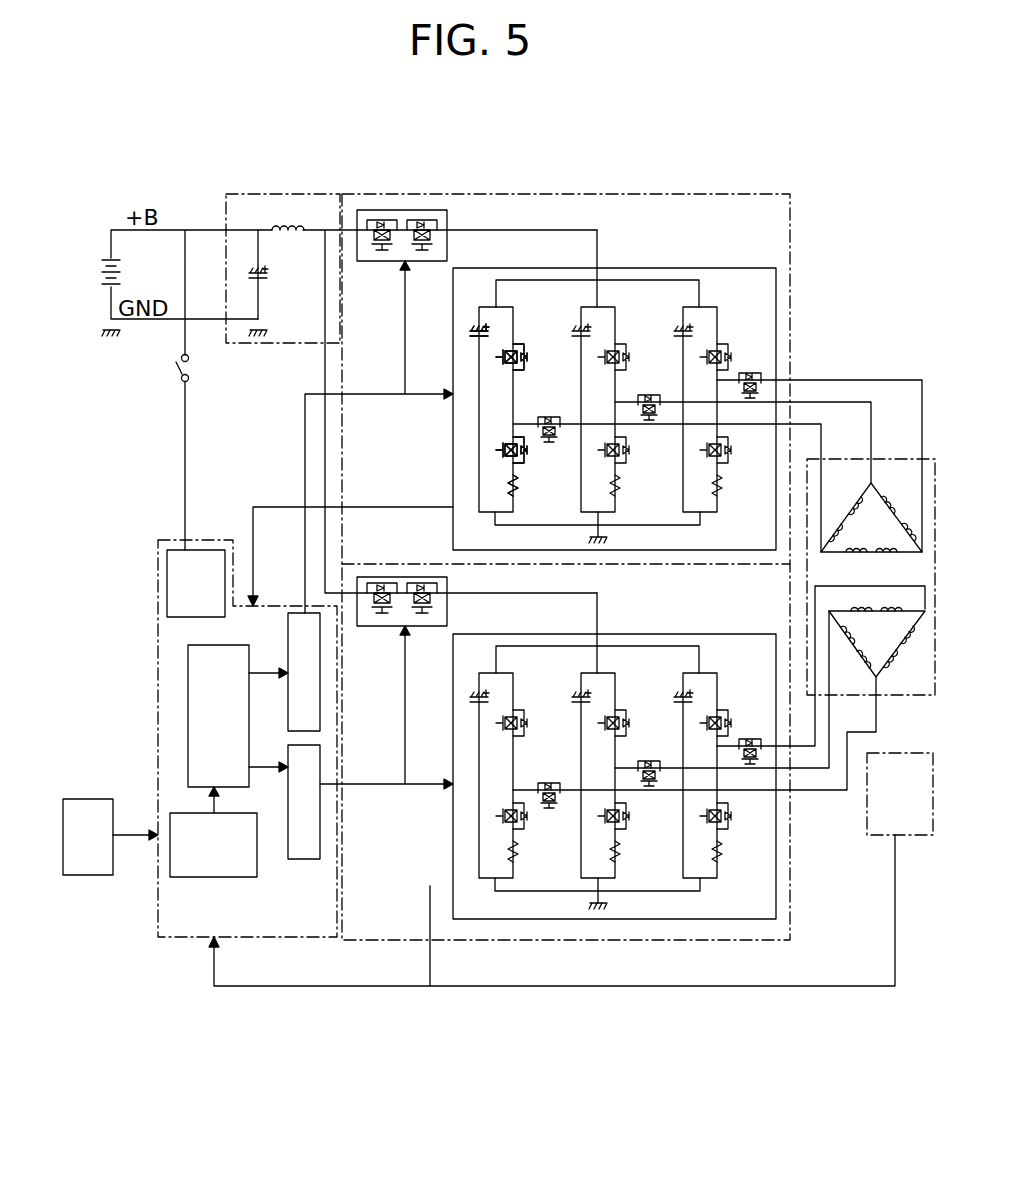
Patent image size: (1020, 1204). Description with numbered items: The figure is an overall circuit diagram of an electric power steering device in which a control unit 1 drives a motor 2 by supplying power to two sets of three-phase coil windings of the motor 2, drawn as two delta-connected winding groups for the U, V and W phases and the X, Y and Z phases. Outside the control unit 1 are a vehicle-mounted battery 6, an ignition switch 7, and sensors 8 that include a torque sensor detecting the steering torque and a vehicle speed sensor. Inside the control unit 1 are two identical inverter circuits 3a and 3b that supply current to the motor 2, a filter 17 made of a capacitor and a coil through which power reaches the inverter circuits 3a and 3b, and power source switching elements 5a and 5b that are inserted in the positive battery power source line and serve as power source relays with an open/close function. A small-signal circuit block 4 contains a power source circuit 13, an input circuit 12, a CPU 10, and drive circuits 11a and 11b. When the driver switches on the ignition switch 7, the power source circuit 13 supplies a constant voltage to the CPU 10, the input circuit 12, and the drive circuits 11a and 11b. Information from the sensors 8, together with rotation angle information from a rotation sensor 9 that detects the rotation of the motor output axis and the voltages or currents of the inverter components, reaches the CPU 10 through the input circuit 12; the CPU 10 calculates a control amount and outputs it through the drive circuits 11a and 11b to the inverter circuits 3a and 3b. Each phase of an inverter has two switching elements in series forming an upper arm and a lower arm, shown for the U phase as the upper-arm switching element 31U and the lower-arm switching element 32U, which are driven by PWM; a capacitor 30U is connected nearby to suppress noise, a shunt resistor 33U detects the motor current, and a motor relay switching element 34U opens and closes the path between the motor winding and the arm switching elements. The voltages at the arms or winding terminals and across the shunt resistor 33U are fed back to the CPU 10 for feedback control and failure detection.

The control unit 1 is at (716, 185).
The motor 2 is at (888, 458).
The inverter circuit 3a is at (776, 284).
The inverter circuit 3b is at (670, 919).
The control unit 4 is at (157, 592).
The power source switching element 5a is at (400, 210).
The power source switching element 5b is at (383, 577).
The battery 6 is at (108, 256).
The ignition switch 7 is at (178, 370).
The sensors 8 is at (85, 877).
The rotation sensor 9 is at (880, 836).
The CPU 10 is at (158, 700).
The drive circuit 11a is at (296, 613).
The drive circuit 11b is at (312, 859).
The input circuit 12 is at (186, 877).
The power source circuit 13 is at (167, 548).
The filter 17 is at (285, 194).
The capacitor 30U is at (472, 330).
The upper-arm switching element 31U is at (520, 354).
The lower-arm switching element 32U is at (520, 456).
The shunt resistor 33U is at (516, 498).
The motor relay switching element 34U is at (548, 416).